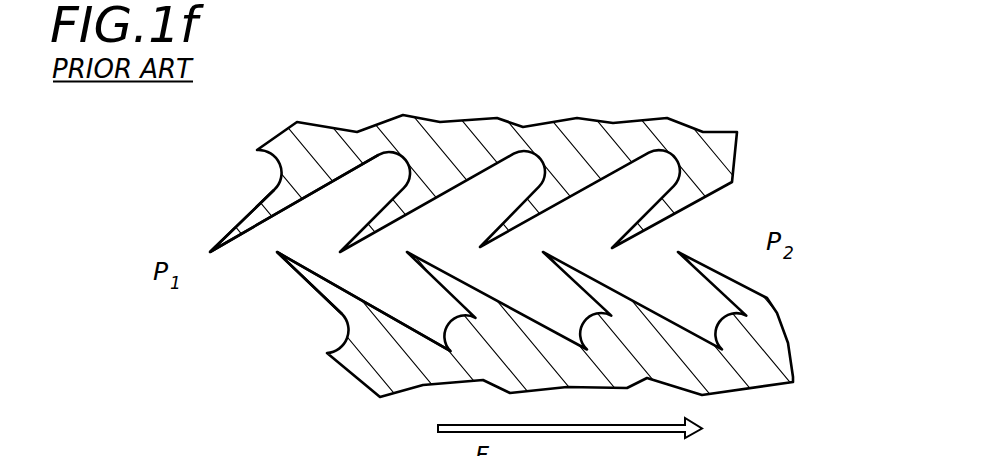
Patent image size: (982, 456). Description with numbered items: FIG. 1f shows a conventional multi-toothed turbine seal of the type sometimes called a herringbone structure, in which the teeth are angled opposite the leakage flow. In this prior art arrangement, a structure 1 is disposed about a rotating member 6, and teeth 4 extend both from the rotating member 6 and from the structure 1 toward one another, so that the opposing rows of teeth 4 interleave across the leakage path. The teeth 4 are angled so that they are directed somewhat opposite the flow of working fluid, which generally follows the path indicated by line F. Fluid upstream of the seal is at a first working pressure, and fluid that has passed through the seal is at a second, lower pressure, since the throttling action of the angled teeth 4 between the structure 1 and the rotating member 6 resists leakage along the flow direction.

The structure 1 is at (455, 143).
The teeth 4 is at (240, 227).
The rotating member 6 is at (733, 377).